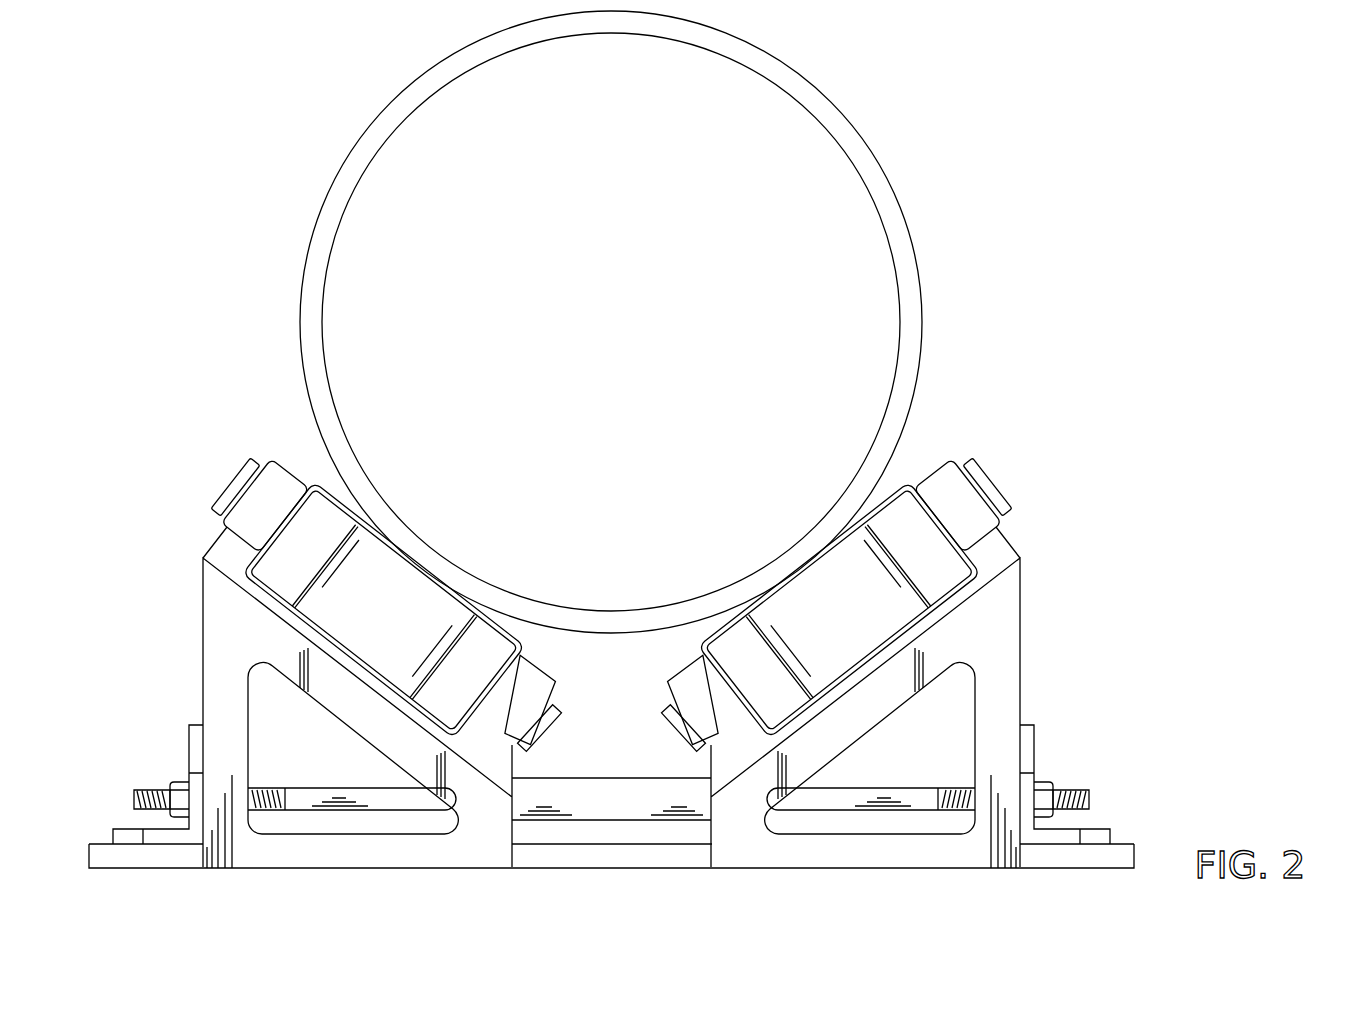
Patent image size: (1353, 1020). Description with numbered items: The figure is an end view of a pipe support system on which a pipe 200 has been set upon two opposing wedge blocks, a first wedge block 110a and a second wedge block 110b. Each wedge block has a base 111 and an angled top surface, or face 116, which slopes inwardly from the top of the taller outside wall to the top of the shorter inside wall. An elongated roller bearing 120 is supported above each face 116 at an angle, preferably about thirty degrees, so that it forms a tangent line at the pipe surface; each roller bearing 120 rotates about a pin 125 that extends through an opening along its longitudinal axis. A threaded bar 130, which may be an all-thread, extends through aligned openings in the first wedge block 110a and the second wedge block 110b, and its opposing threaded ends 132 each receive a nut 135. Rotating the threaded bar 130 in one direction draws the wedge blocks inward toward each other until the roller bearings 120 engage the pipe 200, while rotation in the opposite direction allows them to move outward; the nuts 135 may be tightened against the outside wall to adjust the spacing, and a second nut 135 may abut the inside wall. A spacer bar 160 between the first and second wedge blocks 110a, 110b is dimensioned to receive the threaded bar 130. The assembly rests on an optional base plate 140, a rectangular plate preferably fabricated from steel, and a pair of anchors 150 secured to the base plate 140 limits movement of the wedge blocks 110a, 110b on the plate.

The pipe 200 is at (925, 318).
The first wedge block 110a is at (200, 643).
The second wedge block 110b is at (1023, 677).
The base 111 is at (287, 860).
The face 116 is at (354, 660).
The roller bearing 120 is at (393, 572).
The pin 125 is at (240, 485).
The threaded bar 130 is at (373, 806).
The threaded ends 132 is at (132, 798).
The nut 135 is at (178, 783).
The base plate 140 is at (551, 860).
The anchor 150 is at (188, 741).
The spacer bar 160 is at (612, 776).